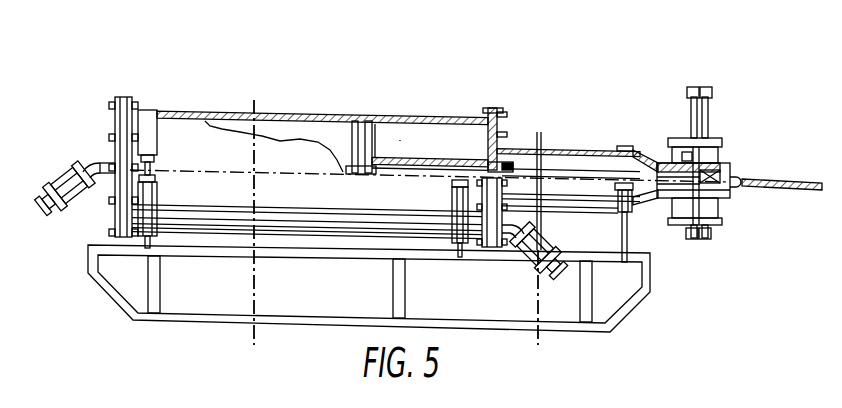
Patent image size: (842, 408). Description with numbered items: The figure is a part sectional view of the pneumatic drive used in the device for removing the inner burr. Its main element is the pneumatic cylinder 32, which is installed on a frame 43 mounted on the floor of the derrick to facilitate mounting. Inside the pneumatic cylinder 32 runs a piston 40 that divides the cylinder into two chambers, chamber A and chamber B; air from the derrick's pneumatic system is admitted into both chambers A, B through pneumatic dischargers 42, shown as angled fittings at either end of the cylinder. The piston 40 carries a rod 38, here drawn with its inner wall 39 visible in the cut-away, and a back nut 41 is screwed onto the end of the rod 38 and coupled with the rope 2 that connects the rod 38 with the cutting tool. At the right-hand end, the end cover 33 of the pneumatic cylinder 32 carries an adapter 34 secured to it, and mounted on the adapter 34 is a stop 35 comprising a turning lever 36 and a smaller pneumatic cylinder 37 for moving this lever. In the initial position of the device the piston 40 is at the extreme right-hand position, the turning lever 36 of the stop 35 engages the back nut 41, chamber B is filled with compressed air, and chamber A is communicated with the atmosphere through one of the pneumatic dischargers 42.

The rope 2 is at (801, 190).
The pneumatic cylinder 32 is at (287, 113).
The end cover 33 is at (513, 164).
The adapter 34 is at (580, 150).
The stop 35 is at (714, 131).
The turning lever 36 is at (720, 148).
The pneumatic cylinder 37 is at (710, 208).
The rod 38 is at (376, 156).
The inner tube wall 39 is at (403, 166).
The piston 40 is at (358, 176).
The back nut 41 is at (720, 176).
The pneumatic discharger 42 is at (65, 210).
The frame 43 is at (598, 328).
The chamber A is at (217, 121).
The chamber B is at (421, 132).